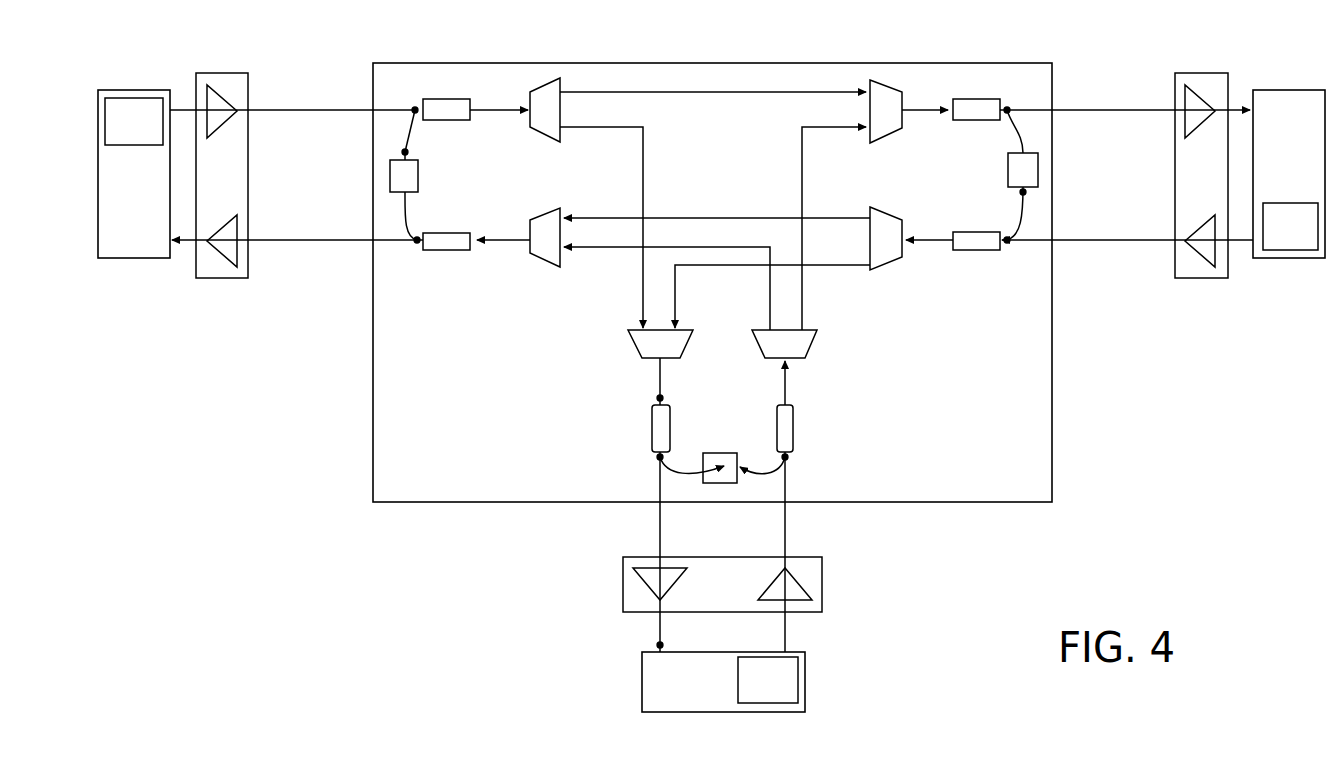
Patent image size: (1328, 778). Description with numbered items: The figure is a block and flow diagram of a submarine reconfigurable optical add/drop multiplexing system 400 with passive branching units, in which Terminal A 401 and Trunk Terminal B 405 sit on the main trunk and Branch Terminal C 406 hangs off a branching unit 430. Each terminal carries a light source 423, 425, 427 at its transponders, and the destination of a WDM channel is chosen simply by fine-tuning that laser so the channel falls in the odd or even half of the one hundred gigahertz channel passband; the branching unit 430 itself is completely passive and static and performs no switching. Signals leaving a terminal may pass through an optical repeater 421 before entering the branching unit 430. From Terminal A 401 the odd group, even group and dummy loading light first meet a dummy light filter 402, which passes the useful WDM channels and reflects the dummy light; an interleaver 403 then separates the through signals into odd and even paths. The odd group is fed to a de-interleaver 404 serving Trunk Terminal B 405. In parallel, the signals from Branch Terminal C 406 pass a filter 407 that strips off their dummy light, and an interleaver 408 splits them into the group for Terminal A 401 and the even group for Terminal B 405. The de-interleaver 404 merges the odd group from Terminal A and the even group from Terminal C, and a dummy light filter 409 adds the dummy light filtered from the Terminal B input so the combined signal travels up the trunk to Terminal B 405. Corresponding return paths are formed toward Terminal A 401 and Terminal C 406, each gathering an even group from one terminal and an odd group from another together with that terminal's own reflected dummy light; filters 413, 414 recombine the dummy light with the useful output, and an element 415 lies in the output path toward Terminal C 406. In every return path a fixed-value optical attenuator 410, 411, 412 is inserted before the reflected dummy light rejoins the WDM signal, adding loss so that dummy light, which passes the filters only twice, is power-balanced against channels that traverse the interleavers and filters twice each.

The submarine reconfigurable optical add/drop multiplexing system 400 is at (202, 48).
The Terminal A 401 is at (133, 211).
The dummy light filter 402 is at (437, 98).
The interleaver 403 is at (549, 88).
The de-interleaver 404 is at (891, 90).
The Trunk Terminal B 405 is at (1285, 138).
The Branch Terminal C 406 is at (686, 685).
The filter 407 is at (792, 433).
The interleaver 408 is at (808, 345).
The dummy light filter 409 is at (983, 98).
The optical attenuator 410 is at (398, 174).
The optical attenuator 411 is at (1025, 174).
The optical attenuator 412 is at (727, 461).
The filter 413 is at (444, 252).
The filter 414 is at (978, 252).
The output register 415 is at (655, 431).
The optical repeater 421 is at (225, 272).
The light source 423 is at (156, 136).
The light source 425 is at (1314, 246).
The light source 427 is at (792, 698).
The branching unit 430 is at (472, 428).